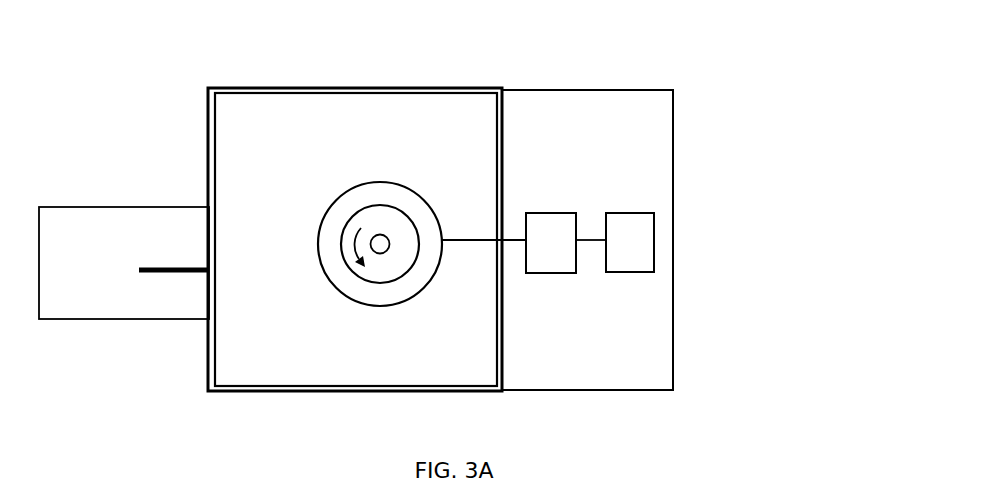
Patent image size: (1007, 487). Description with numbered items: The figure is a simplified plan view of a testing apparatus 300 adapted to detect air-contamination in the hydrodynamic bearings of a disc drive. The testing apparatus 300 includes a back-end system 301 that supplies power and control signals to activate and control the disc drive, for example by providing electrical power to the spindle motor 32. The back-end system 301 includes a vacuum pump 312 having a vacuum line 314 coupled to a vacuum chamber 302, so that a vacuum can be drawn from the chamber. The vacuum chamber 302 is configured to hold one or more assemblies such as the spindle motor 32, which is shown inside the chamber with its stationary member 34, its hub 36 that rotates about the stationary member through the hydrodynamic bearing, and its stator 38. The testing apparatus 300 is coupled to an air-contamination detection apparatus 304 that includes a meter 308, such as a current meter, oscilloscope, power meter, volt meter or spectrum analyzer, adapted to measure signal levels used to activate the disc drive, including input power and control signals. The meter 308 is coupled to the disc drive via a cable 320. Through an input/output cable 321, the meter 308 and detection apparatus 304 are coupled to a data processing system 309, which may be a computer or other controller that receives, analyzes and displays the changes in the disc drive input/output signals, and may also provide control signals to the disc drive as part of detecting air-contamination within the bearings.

The testing apparatus 300 is at (726, 70).
The back-end system 301 is at (673, 208).
The vacuum chamber 302 is at (333, 89).
The air-contamination detection apparatus 304 is at (588, 72).
The meter 308 is at (556, 212).
The data processing system 309 is at (628, 273).
The vacuum pump 312 is at (113, 205).
The vacuum line 314 is at (178, 275).
The cable 320 is at (483, 243).
The input/output cable 321 is at (594, 243).
The spindle motor 32 is at (310, 191).
The stationary member 34 is at (372, 235).
The hub 36 is at (395, 208).
The stator 38 is at (348, 300).